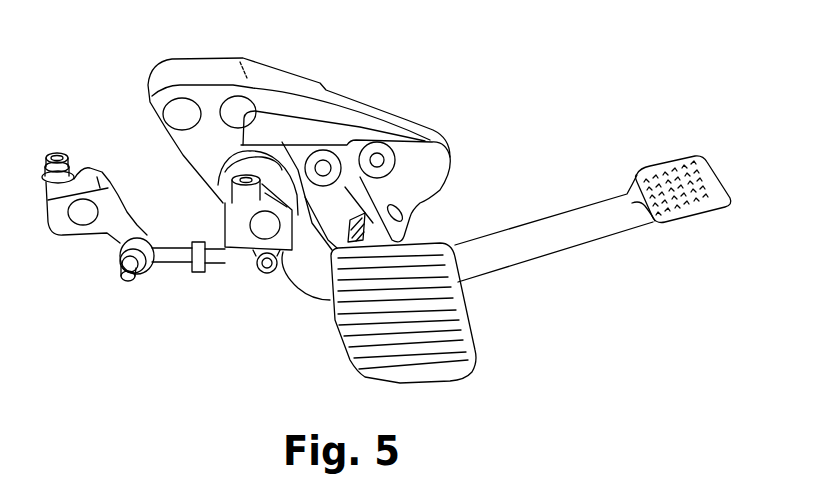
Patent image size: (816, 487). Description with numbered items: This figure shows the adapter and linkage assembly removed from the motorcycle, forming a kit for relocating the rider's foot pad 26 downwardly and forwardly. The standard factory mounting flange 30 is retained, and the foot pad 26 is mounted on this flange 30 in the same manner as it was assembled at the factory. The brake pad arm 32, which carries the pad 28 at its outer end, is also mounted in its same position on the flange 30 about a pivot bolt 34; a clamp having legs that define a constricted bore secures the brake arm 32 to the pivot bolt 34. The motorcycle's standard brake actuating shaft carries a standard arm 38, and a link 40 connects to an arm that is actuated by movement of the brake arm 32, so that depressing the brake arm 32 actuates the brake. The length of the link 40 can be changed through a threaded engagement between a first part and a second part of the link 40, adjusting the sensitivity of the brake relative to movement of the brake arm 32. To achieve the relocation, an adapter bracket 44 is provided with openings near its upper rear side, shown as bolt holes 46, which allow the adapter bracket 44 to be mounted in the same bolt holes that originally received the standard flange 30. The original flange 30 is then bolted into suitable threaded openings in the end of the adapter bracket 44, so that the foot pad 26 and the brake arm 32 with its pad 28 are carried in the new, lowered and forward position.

The foot pad 26 is at (360, 330).
The pad 28 is at (674, 212).
The mounting flange 30 is at (416, 168).
The brake pad arm 32 is at (532, 228).
The pivot bolt 34 is at (258, 228).
The arm 38 is at (122, 202).
The link 40 is at (213, 265).
The adapter bracket 44 is at (287, 86).
The bolt holes 46 is at (236, 106).